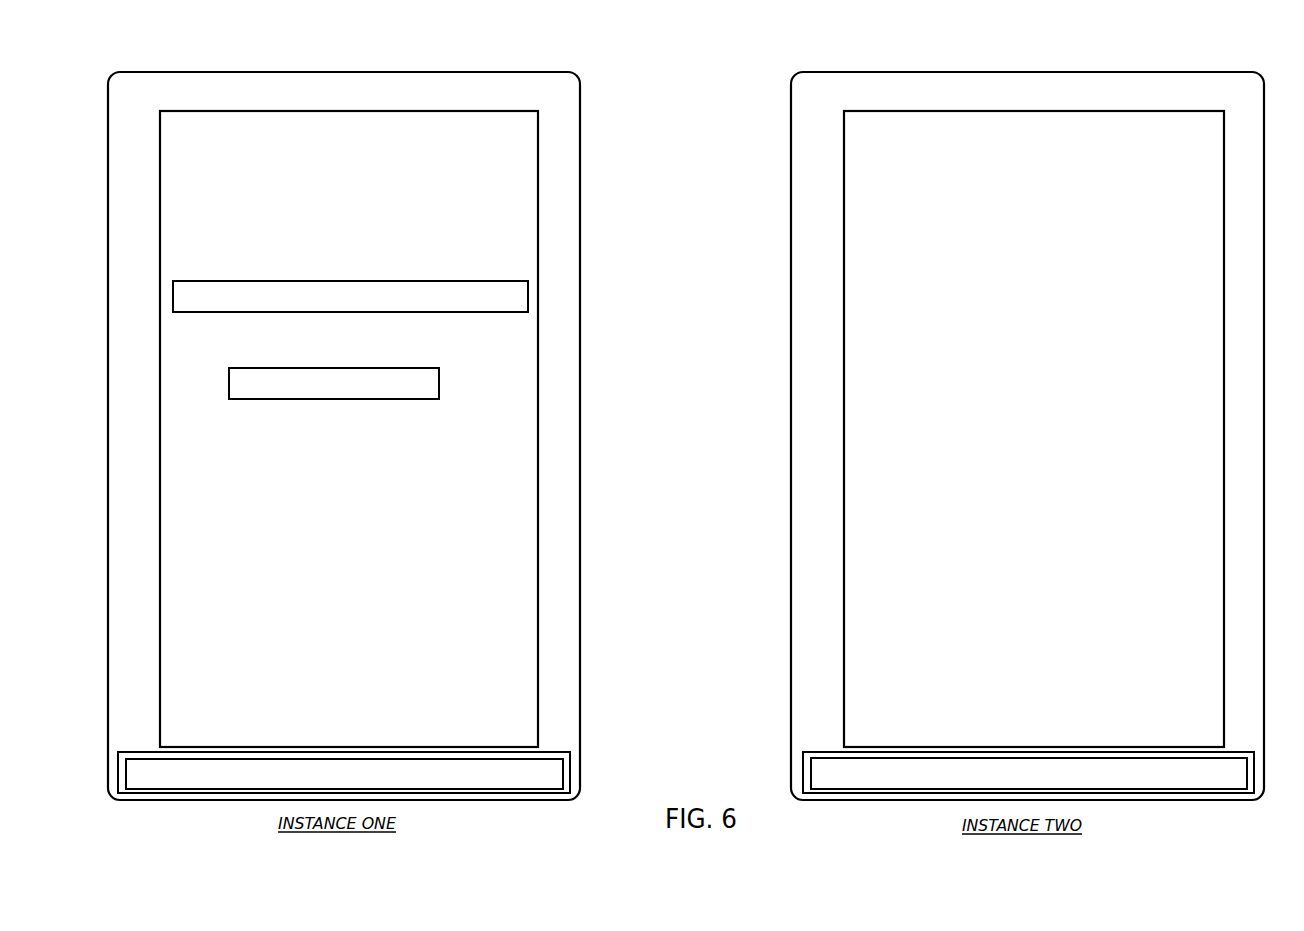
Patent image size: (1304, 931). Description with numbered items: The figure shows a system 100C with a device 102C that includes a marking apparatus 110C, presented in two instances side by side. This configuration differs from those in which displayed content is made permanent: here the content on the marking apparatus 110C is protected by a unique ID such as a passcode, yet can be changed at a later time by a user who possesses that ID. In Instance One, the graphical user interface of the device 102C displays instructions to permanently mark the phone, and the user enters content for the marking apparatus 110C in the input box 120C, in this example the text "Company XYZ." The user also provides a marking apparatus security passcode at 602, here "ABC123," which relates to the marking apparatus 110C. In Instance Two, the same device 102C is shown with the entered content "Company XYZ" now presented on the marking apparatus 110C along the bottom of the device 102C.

The system 100C is at (543, 53).
The device 102C is at (577, 75).
The marking apparatus 110C is at (401, 753).
The input box 120C is at (248, 281).
The marking apparatus security passcode 602 is at (240, 367).